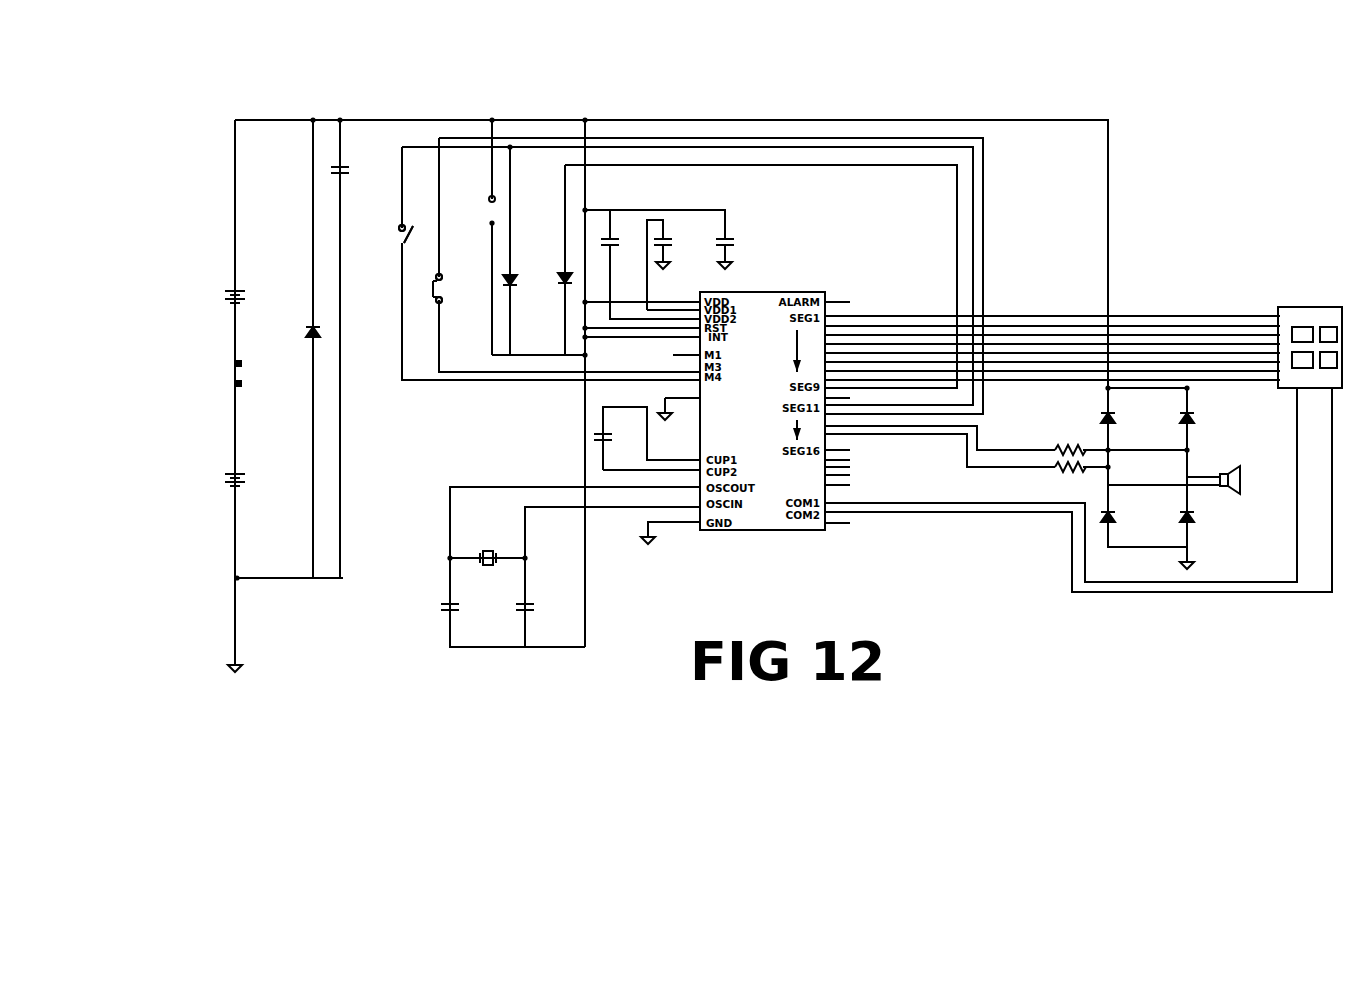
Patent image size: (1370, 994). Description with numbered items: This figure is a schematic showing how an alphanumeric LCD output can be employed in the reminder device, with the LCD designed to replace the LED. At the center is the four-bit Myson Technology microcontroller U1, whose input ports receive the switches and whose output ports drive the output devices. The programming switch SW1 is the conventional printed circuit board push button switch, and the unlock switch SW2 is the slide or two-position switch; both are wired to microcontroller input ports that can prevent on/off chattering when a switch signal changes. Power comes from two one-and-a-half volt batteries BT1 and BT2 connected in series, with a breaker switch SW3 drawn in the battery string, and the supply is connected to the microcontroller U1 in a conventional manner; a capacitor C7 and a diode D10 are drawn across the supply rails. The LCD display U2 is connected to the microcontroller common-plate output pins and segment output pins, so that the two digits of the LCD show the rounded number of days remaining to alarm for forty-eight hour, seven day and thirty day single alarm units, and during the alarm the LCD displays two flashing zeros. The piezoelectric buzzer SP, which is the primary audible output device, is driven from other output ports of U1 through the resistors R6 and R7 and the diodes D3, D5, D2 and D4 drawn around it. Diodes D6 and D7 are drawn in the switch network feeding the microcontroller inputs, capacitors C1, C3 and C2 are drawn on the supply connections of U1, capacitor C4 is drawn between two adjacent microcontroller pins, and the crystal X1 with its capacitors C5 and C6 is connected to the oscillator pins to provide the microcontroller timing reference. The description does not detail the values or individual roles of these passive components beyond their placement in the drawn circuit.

The capacitor 10uF 6V C7 is at (332, 170).
The diode 1N4004 D10 is at (310, 330).
The battery BT1 is at (206, 306).
The breaker switch SW3 is at (232, 379).
The battery BT2 is at (212, 489).
The unlock switch SW2 is at (404, 253).
The programming switch SW1 is at (440, 306).
The diode 1N4148 D7 is at (504, 284).
The diode 1N4148 D6 is at (563, 283).
The capacitor 1uF C1 is at (610, 237).
The capacitor 0.1uF C3 is at (666, 238).
The capacitor 0.1uF C2 is at (731, 243).
The capacitor 0.1uF C4 is at (600, 440).
The crystal 32.768 kHz X1 is at (478, 560).
The capacitor 220pF C5 is at (448, 613).
The capacitor 22pF C6 is at (526, 613).
The microcontroller U1 is at (762, 443).
The LCD display U2 is at (1277, 305).
The diode 1N4148 D5 is at (1186, 412).
The diode 1N4148 D3 is at (1100, 417).
The resistor 1k R6 is at (1058, 449).
The resistor 1k R7 is at (1062, 466).
The diode 1N4148 D2 is at (1100, 521).
The diode 1N4148 D4 is at (1185, 521).
The piezoelectric buzzer SP is at (1231, 486).